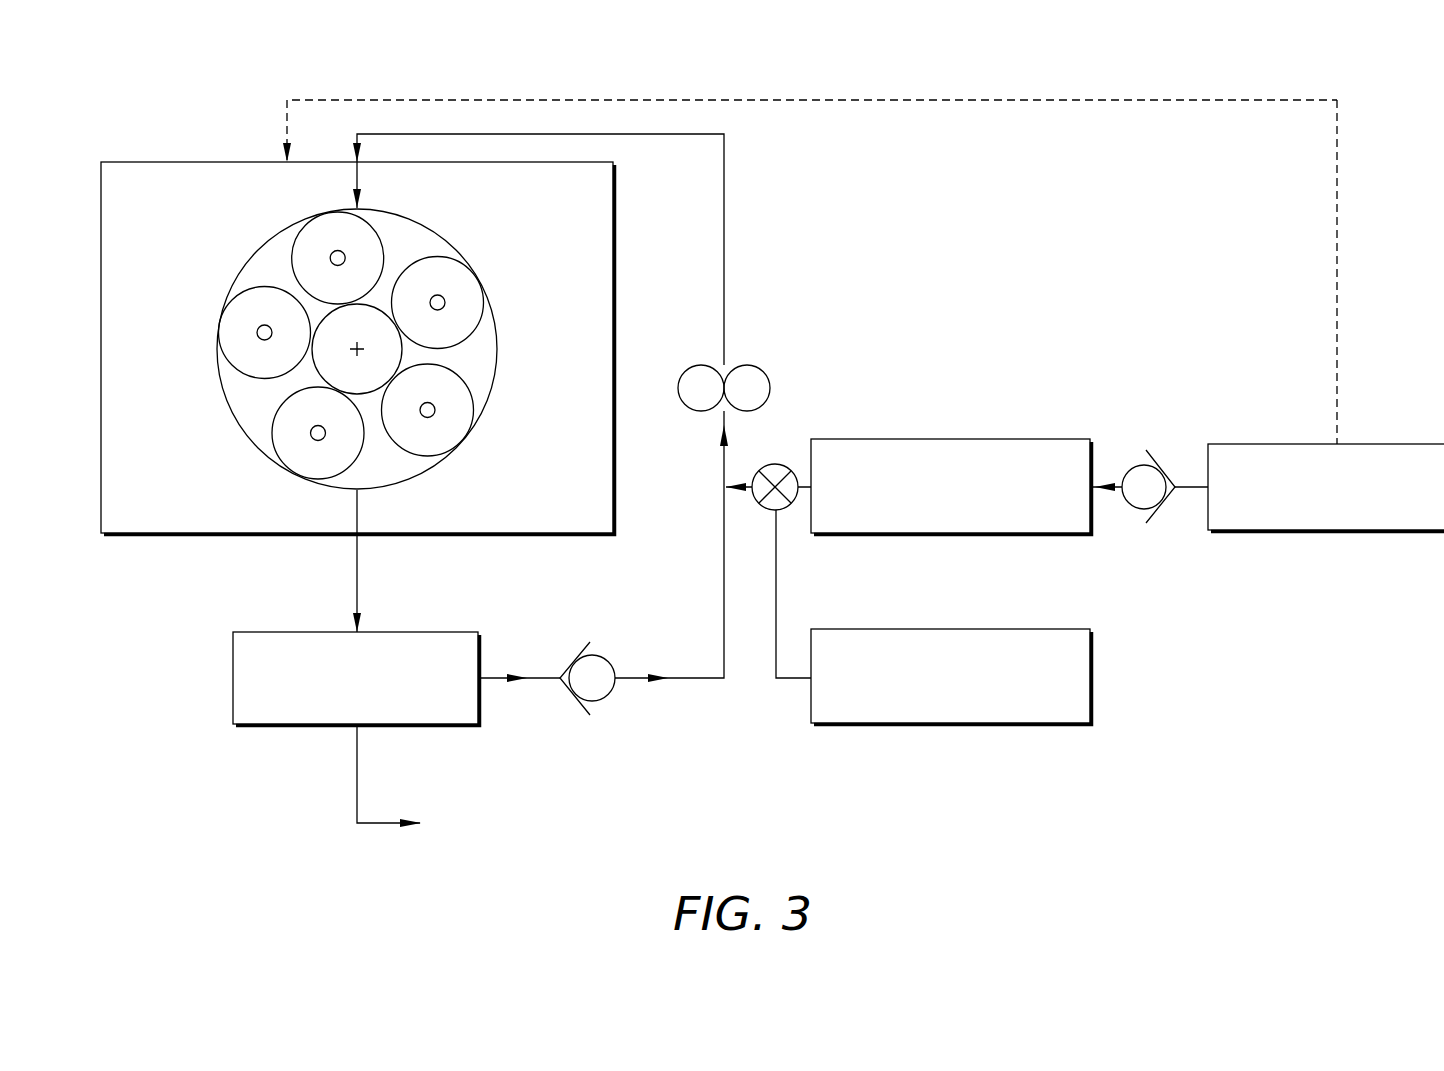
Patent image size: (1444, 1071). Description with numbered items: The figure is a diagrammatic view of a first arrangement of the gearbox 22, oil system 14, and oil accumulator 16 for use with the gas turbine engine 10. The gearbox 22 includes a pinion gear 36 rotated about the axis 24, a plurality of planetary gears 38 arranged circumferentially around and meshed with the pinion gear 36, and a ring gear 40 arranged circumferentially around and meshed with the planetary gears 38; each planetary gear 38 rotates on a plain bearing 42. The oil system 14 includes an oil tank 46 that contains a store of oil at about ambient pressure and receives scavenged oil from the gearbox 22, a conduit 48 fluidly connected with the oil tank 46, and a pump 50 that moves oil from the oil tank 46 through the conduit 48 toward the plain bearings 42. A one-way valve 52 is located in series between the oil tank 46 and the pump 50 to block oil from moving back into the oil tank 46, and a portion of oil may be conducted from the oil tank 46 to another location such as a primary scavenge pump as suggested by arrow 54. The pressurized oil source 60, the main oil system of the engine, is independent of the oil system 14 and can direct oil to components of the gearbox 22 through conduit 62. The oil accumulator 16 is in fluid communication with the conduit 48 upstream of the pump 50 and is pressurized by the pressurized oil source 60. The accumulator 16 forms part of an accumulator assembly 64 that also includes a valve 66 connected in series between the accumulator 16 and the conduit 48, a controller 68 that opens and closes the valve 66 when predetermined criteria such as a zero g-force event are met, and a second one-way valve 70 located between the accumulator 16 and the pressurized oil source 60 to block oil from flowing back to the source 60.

The gas turbine engine 10 is at (967, 90).
The oil system 14 is at (685, 701).
The oil accumulator 16 is at (939, 437).
The gearbox 22 is at (177, 158).
The axis 24 is at (360, 338).
The pinion gear 36 is at (330, 367).
The planetary gears 38 is at (243, 305).
The ring gear 40 is at (218, 389).
The plain bearing 42 is at (253, 328).
The oil tank 46 is at (270, 630).
The conduit 48 is at (724, 190).
The pump 50 is at (752, 353).
The one-way valve 52 is at (577, 712).
The arrow 54 is at (383, 823).
The pressurized oil source 60 is at (1257, 443).
The conduit 62 is at (1337, 243).
The accumulator assembly 64 is at (1022, 633).
The valve 66 is at (786, 464).
The controller 68 is at (959, 628).
The second one-way valve 70 is at (1157, 450).